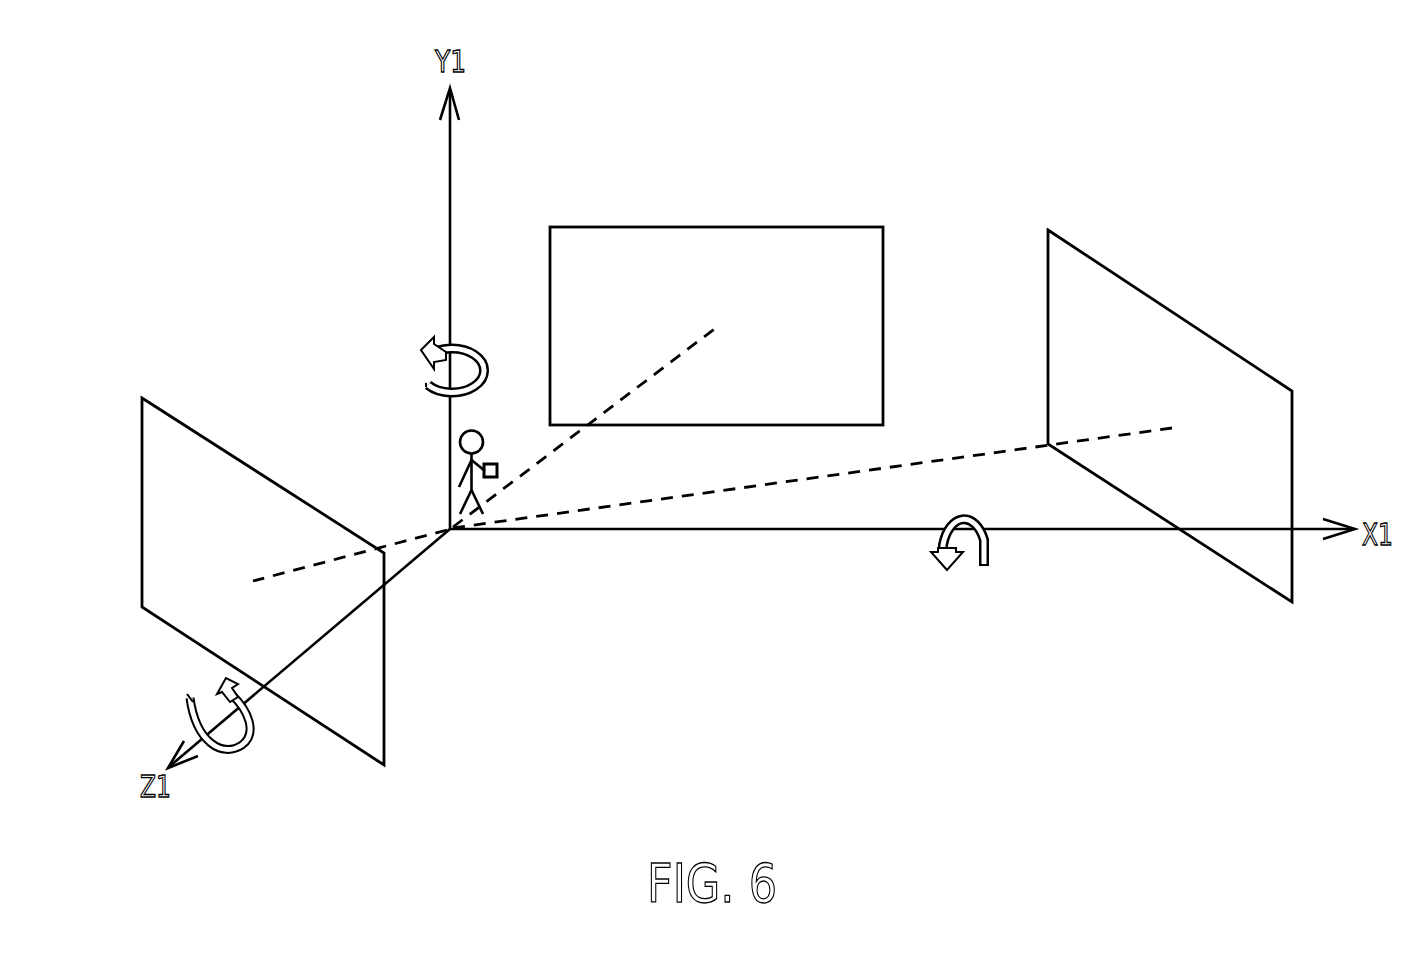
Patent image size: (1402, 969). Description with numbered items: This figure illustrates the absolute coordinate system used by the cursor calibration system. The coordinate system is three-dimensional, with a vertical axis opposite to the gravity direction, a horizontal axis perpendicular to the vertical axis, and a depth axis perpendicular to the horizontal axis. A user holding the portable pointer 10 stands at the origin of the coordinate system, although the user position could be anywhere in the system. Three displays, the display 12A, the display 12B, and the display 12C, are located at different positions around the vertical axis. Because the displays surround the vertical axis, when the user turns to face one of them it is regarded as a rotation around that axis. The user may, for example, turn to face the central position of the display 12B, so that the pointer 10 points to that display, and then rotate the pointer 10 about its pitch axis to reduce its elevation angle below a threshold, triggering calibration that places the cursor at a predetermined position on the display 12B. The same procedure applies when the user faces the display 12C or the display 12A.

The pointer 10 is at (497, 480).
The display 12A is at (720, 227).
The display 12B is at (1180, 315).
The display 12C is at (142, 517).